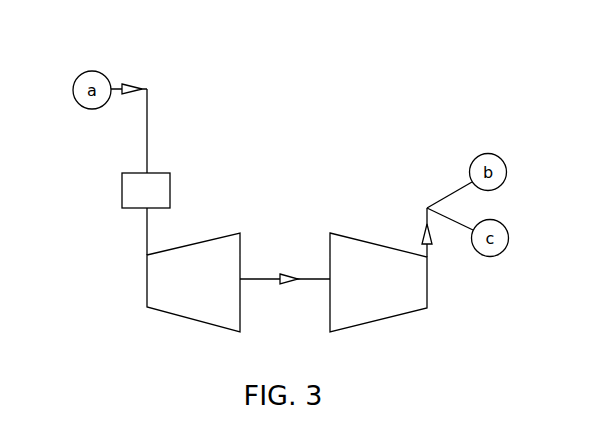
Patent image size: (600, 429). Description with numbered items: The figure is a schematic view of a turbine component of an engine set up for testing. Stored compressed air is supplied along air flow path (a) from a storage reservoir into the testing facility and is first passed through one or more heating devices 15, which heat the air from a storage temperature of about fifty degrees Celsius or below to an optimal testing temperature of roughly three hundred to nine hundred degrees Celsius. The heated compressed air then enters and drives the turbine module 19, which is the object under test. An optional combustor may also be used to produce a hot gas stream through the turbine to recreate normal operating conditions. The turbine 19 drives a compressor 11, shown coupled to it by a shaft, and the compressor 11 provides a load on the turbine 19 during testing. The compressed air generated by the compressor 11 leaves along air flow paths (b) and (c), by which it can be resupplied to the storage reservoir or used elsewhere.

The compressor 11 is at (353, 247).
The heating device 15 is at (122, 186).
The turbine module 19 is at (160, 275).